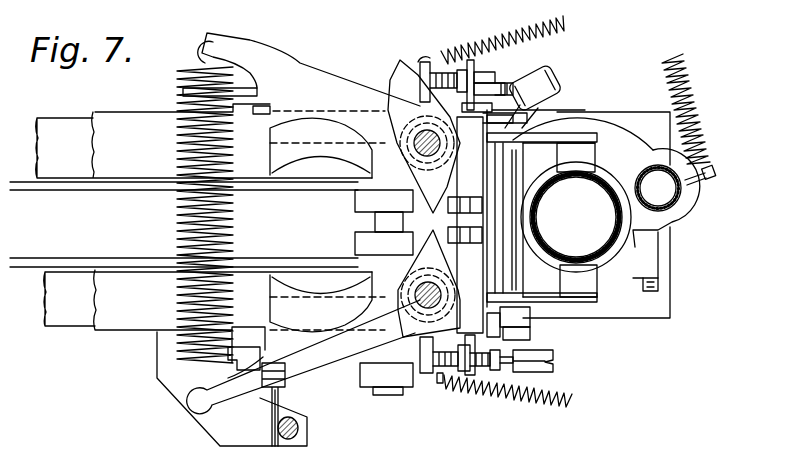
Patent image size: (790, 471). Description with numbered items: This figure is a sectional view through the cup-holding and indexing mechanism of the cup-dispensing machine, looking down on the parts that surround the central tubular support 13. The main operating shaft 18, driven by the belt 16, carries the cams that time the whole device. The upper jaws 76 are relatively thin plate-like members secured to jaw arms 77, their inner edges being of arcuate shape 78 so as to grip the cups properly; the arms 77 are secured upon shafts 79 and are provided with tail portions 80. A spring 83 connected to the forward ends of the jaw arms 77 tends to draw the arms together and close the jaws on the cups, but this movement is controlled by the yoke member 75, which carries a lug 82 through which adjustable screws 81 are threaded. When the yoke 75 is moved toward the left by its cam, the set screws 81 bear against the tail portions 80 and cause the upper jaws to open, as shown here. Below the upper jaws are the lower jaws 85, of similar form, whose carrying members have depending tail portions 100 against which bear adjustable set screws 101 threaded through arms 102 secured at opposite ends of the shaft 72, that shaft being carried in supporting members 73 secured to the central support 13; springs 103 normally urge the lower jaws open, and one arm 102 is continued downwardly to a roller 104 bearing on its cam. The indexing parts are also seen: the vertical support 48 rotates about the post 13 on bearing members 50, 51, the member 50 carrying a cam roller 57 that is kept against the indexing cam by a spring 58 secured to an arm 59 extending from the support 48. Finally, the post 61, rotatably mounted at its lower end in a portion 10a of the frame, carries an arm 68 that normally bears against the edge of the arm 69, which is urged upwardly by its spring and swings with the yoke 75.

The belt 16 is at (31, 184).
The spring 83 is at (185, 228).
The arcuate inner edge 78 is at (280, 125).
The upper jaw 76 is at (296, 110).
The jaw arm 77 is at (325, 88).
The shaft 79 is at (428, 135).
The shaft 72 is at (490, 93).
The cam roller 57 is at (552, 80).
The supporting member 73 is at (542, 138).
The bearing member 50 is at (630, 137).
The spring 58 is at (675, 62).
The arm 59 is at (712, 180).
The tubular support 13 is at (610, 182).
The vertical support 48 is at (683, 210).
The tail portion 80 is at (442, 203).
The lug 82 is at (463, 197).
The adjustable screw 81 is at (483, 232).
The lower jaw 85 is at (285, 160).
The yoke member 75 is at (482, 283).
The bearing member 51 is at (630, 282).
The roller 104 is at (553, 358).
The spring 103 is at (527, 410).
The arm 102 is at (477, 390).
The adjustable set screw 101 is at (457, 388).
The depending tail portion 100 is at (430, 388).
The main operating shaft 18 is at (390, 390).
The arm 69 is at (348, 380).
The post 61 is at (307, 428).
The arm 68 is at (272, 415).
The frame portion 10a is at (233, 448).